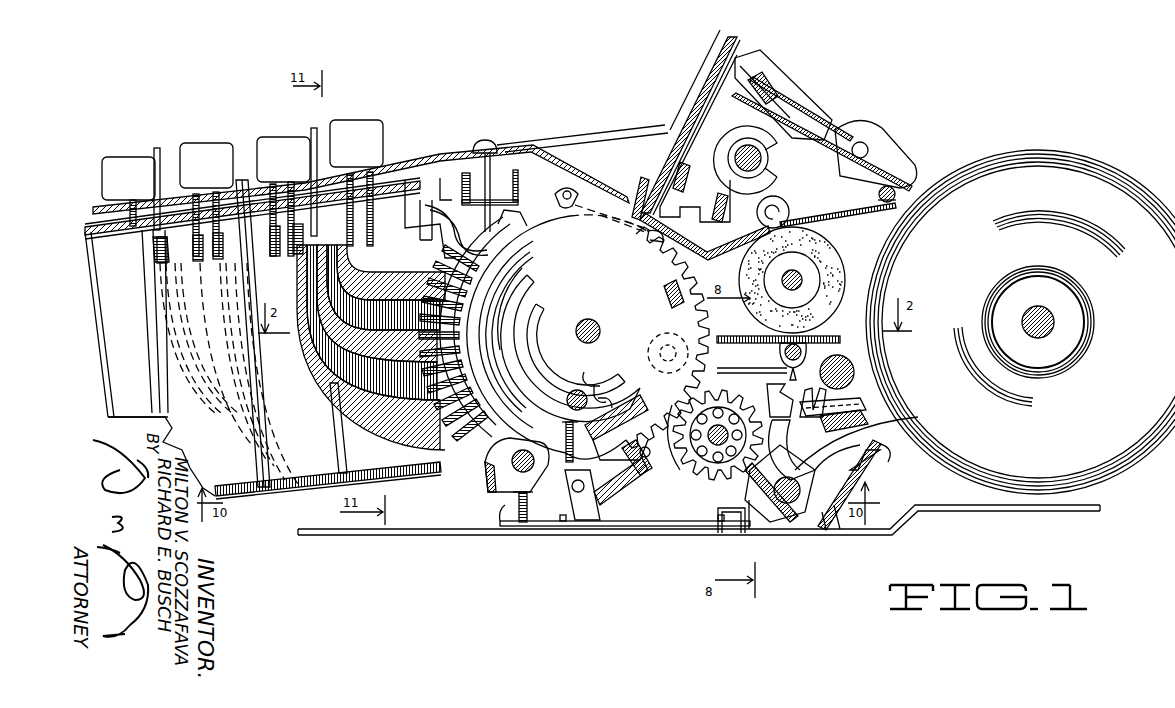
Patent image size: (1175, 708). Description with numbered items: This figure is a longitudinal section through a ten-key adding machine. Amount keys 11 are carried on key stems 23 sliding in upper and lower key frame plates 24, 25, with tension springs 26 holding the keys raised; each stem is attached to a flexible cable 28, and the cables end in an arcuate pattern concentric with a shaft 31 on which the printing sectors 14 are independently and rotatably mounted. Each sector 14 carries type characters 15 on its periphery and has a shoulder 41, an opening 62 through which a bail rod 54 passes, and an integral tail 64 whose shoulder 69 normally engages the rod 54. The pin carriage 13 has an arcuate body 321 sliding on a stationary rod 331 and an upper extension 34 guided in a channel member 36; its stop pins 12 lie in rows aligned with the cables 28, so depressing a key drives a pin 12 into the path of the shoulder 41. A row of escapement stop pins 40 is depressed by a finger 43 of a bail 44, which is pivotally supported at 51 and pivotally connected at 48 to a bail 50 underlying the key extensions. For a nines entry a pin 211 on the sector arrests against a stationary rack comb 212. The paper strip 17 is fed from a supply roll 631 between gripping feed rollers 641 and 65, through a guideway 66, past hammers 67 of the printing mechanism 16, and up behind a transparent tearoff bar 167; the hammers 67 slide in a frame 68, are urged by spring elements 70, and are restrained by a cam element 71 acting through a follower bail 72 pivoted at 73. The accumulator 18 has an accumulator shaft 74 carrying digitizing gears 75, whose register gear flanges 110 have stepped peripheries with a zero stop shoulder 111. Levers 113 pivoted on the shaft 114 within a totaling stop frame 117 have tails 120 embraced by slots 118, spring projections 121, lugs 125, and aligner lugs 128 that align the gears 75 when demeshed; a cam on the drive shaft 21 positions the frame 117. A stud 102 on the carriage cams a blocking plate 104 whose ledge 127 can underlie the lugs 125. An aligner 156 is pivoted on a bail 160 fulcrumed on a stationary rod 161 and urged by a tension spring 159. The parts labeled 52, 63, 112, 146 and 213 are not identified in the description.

The amount keys 11 is at (307, 137).
The pivotal connection 48 is at (468, 157).
The upper key frame plate 24 is at (85, 228).
The key stem 23 is at (150, 294).
The bail 50 is at (155, 250).
The tension springs 26 is at (262, 487).
The lower key frame plate 25 is at (318, 482).
The flexible cable 28 is at (292, 290).
The bail 44 is at (460, 214).
The pivot 51 is at (470, 198).
The channel member 36 is at (520, 190).
The extension 34 is at (504, 220).
The finger 43 is at (430, 230).
The lever 52 is at (458, 242).
The type characters 15 is at (538, 232).
The printing sectors 14 is at (605, 257).
The escapement stop pins 40 is at (498, 270).
The pin carriage 13 is at (475, 471).
The stop pin 12 is at (495, 322).
The arcuate body 321 is at (492, 344).
The shoulder 41 is at (500, 366).
The tail 64 is at (545, 333).
The shaft 31 is at (590, 318).
The openings 62 is at (584, 372).
The lever 63 is at (594, 384).
The shoulder 69 is at (570, 392).
The bail rod 54 is at (602, 398).
The pin 211 is at (676, 375).
The guideway 66 is at (706, 255).
The stationary rod 331 is at (505, 490).
The stationary rack comb 212 is at (532, 505).
The plate 213 is at (533, 525).
The stud 102 is at (505, 528).
The blocking plate 104 is at (665, 536).
The stationary rod 161 is at (582, 492).
The aligner 156 is at (612, 437).
The tension spring 159 is at (640, 498).
The bail 160 is at (646, 492).
The flange 110 is at (648, 474).
The accumulator 18 is at (690, 484).
The ledge 127 is at (720, 512).
The bar 146 is at (745, 337).
The digitizing gears 75 is at (726, 368).
The drive shaft 21 is at (838, 360).
The accumulator shaft 74 is at (766, 390).
The zero stop shoulder 111 is at (798, 398).
The arm 112 is at (826, 404).
The levers 113 is at (836, 413).
The aligner lugs 128 is at (788, 447).
The slots 118 is at (876, 452).
The totaling stop frame 117 is at (870, 472).
The tails 120 is at (880, 430).
The shaft 114 is at (780, 522).
The lugs 125 is at (749, 535).
The spring projection 121 is at (838, 543).
The paper strip 17 is at (700, 70).
The printing mechanism 16 is at (666, 122).
The hammers 67 is at (695, 147).
The transparent tearoff bar 167 is at (640, 184).
The frame 68 is at (766, 74).
The spring elements 70 is at (800, 102).
The rotatable cam element 71 is at (770, 162).
The follower bail 72 is at (834, 170).
The pivot 73 is at (878, 194).
The gripping feed roller 641 is at (789, 210).
The gripping feed roller 65 is at (844, 257).
The supply roll 631 is at (1012, 152).